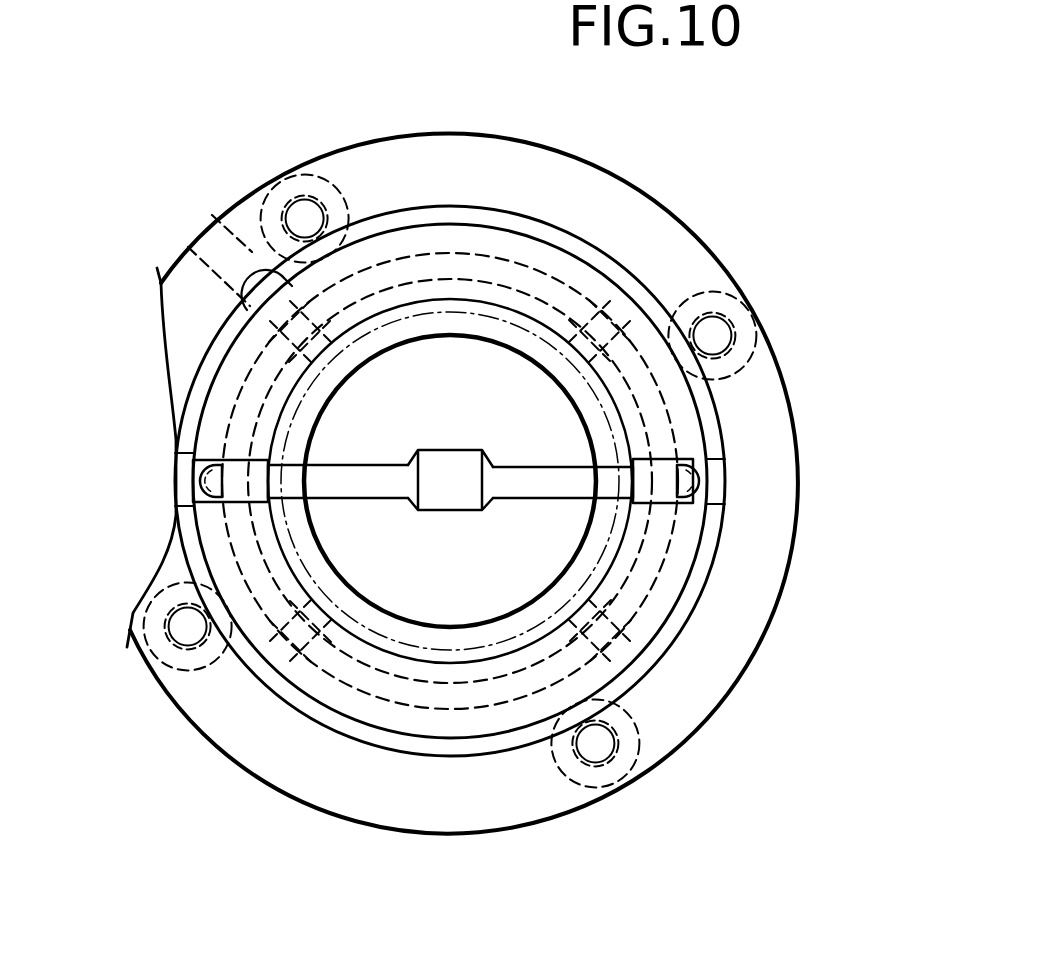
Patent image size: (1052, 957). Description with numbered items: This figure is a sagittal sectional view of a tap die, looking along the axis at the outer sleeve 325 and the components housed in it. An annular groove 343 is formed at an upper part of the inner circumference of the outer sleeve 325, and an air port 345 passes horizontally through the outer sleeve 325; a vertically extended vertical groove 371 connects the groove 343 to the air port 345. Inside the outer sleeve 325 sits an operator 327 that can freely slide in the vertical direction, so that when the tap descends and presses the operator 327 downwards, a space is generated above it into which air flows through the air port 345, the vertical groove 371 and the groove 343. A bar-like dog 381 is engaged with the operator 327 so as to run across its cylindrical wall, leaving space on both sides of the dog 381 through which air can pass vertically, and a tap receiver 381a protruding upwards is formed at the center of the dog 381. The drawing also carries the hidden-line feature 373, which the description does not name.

The outer sleeve 325 is at (782, 420).
The annular groove 343 is at (713, 543).
The operator 327 is at (657, 613).
The air port 345 is at (210, 240).
The vertical groove 371 is at (258, 282).
The hidden recess 373 is at (297, 632).
The dog 381 is at (375, 487).
The tap receiver 381a is at (457, 497).